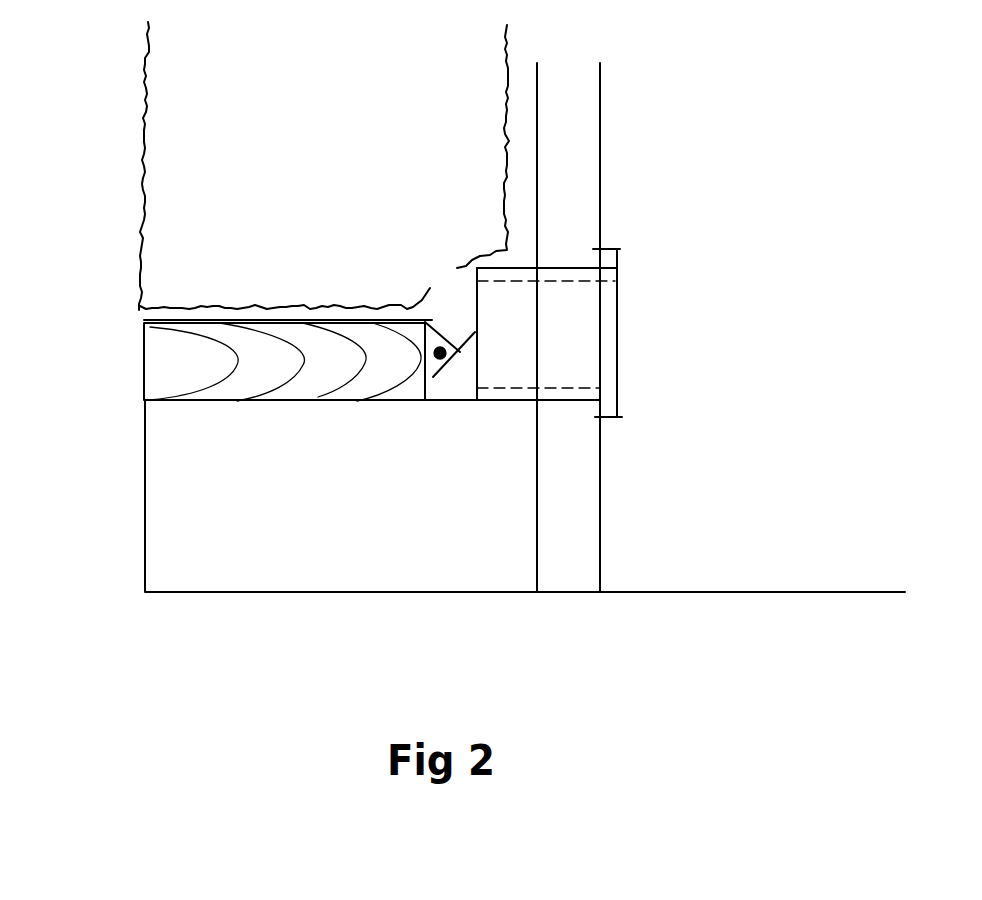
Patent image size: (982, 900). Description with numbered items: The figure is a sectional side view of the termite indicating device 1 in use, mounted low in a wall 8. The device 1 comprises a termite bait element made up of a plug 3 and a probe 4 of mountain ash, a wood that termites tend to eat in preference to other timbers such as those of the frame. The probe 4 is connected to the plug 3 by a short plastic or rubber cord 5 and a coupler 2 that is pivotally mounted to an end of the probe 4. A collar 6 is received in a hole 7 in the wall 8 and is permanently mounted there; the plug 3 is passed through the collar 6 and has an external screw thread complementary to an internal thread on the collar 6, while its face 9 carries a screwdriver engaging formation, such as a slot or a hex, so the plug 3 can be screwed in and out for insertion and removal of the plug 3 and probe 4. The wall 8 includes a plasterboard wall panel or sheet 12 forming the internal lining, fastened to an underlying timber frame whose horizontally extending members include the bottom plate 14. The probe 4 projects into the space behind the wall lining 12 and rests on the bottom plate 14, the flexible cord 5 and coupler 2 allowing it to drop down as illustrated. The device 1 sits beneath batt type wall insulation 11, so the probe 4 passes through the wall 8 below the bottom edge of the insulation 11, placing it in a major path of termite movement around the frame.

The device 1 is at (317, 175).
The coupler 2 is at (433, 377).
The plug 3 is at (582, 303).
The probe 4 is at (230, 322).
The cord 5 is at (468, 337).
The collar 6 is at (619, 268).
The hole 7 is at (555, 403).
The wall 8 is at (549, 205).
The face 9 is at (615, 362).
The wall insulation 11 is at (210, 193).
The plasterboard wall panel 12 is at (603, 133).
The bottom plate 14 is at (203, 478).